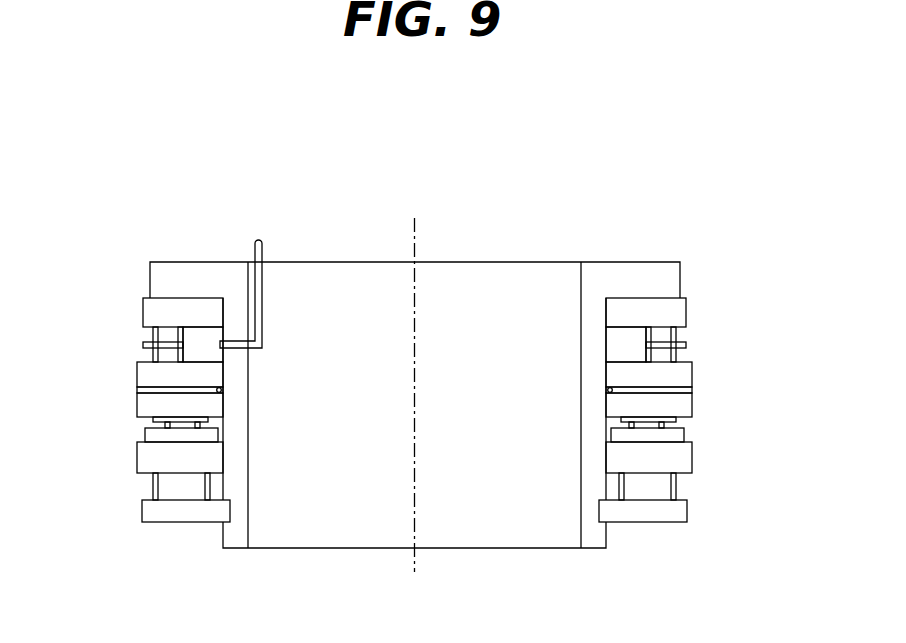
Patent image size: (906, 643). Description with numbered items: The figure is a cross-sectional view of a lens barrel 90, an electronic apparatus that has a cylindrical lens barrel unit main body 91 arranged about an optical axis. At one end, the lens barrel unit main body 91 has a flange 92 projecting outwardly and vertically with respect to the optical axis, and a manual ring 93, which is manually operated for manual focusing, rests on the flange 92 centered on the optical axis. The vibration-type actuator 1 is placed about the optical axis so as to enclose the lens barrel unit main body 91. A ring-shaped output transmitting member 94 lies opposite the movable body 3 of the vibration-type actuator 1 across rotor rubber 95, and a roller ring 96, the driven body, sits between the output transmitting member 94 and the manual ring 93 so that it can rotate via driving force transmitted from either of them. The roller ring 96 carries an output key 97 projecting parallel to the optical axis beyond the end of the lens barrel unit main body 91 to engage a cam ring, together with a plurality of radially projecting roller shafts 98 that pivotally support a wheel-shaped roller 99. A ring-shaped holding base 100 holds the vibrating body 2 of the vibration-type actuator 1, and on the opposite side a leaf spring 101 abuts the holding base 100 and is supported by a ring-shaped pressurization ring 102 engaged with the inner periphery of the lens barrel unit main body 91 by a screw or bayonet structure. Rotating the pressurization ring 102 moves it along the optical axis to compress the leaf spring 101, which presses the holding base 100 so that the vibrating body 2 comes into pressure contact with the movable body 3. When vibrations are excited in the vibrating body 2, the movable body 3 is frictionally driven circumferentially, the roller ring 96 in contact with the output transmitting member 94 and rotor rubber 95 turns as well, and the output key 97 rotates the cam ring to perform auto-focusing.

The lens barrel 90 is at (430, 141).
The lens barrel unit main body 91 is at (593, 542).
The flange 92 is at (149, 272).
The manual ring 93 is at (690, 310).
The output transmitting member 94 is at (137, 365).
The rotor rubber 95 is at (137, 390).
The roller ring 96 is at (691, 363).
The output key 97 is at (253, 243).
The roller shaft 98 is at (688, 346).
The roller 99 is at (681, 337).
The holding base 100 is at (137, 462).
The leaf spring 101 is at (670, 487).
The pressurization ring 102 is at (683, 510).
The vibration-type actuator 1 is at (78, 393).
The vibrating body 2 is at (145, 434).
The movable body 3 is at (137, 403).